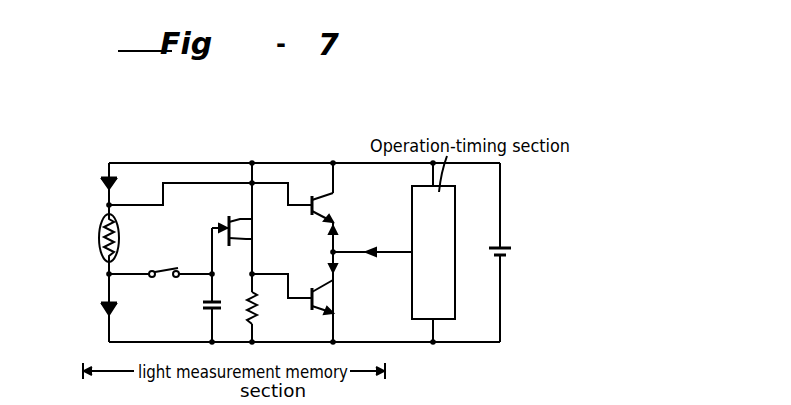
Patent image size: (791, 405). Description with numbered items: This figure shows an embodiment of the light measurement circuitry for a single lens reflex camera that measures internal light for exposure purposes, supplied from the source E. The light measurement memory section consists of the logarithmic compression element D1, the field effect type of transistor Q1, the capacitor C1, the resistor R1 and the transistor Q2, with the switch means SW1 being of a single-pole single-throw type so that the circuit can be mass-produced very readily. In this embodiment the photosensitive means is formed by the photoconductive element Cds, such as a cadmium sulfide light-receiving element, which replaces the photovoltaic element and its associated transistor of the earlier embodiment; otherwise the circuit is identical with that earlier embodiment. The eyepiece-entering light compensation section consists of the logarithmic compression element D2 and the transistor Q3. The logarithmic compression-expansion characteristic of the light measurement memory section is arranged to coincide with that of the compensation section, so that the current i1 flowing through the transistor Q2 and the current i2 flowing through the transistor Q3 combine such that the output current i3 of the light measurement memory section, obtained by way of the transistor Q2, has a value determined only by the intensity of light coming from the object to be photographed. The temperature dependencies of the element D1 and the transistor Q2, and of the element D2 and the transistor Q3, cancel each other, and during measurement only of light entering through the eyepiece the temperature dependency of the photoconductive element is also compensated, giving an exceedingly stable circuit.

The logarithmic compression element D2 is at (102, 180).
The logarithmic compression element D1 is at (102, 304).
The photoconductive element Cds is at (101, 232).
The switch means SW1 is at (168, 266).
The field effect type of transistor Q1 is at (229, 218).
The capacitor C1 is at (206, 306).
The resistor R1 is at (258, 315).
The transistor Q2 is at (318, 300).
The transistor Q3 is at (318, 204).
The current i1 is at (339, 274).
The current i2 is at (326, 237).
The output current i3 is at (385, 248).
The battery E is at (503, 252).